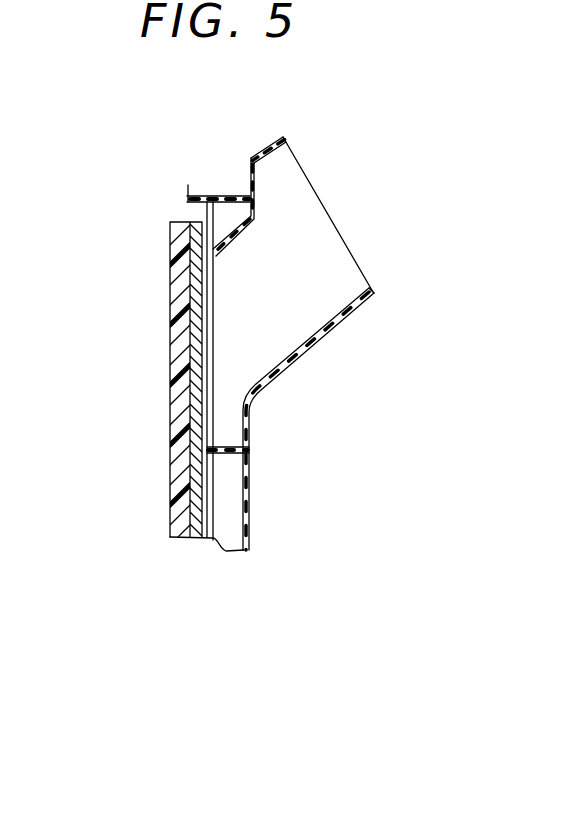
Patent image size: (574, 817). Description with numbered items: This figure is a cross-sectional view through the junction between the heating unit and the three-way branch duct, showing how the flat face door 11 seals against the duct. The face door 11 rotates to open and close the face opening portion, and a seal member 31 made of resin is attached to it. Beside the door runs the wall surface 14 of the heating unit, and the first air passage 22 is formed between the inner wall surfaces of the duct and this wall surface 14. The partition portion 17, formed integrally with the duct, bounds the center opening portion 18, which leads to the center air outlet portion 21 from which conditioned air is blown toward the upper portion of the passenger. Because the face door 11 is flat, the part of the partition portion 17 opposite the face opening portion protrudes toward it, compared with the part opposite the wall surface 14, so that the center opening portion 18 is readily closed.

The face door 11 is at (188, 222).
The wall surface 14 is at (212, 197).
The partition portion 17 is at (227, 455).
The center opening portion 18 is at (230, 250).
The center air outlet portion 21 is at (266, 154).
The first air passage 22 is at (227, 220).
The seal member 31 is at (183, 540).